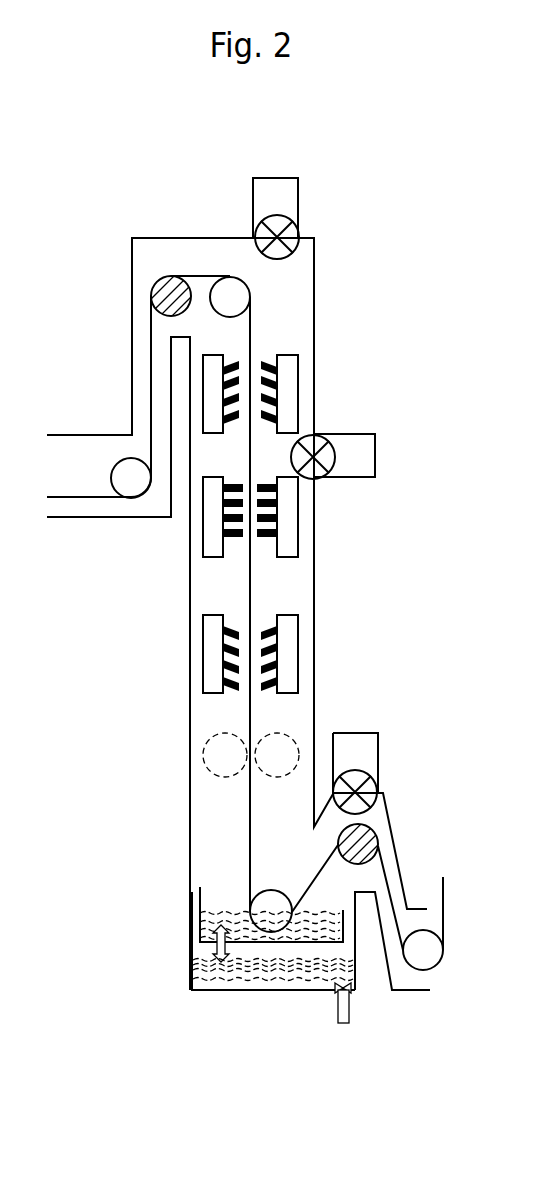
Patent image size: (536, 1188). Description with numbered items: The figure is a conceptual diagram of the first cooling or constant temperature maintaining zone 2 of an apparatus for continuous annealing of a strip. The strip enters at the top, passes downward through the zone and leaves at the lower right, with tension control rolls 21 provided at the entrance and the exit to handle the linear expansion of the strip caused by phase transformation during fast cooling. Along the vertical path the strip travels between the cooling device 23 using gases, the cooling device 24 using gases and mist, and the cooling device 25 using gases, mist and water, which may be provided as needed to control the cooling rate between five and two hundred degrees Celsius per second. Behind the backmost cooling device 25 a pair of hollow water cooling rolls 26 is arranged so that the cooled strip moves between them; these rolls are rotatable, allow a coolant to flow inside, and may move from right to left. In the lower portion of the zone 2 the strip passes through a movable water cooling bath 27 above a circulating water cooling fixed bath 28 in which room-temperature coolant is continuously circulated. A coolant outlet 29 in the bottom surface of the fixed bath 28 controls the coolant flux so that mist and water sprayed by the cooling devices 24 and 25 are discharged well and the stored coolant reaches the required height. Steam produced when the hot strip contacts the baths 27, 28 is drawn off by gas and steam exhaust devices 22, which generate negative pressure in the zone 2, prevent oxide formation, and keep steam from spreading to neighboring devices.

The first cooling or constant temperature maintaining zone 2 is at (190, 603).
The tension control roll 21 is at (158, 293).
The gas and steam exhaust device 22 is at (284, 202).
The cooling device using gases 23 is at (290, 393).
The cooling device using gases and mist 24 is at (290, 515).
The cooling device using gases, mist, and water 25 is at (290, 648).
The hollow water cooling rolls 26 is at (213, 758).
The movable water cooling bath 27 is at (200, 903).
The circulating water cooling fixed bath 28 is at (192, 978).
The coolant outlet 29 is at (352, 1006).